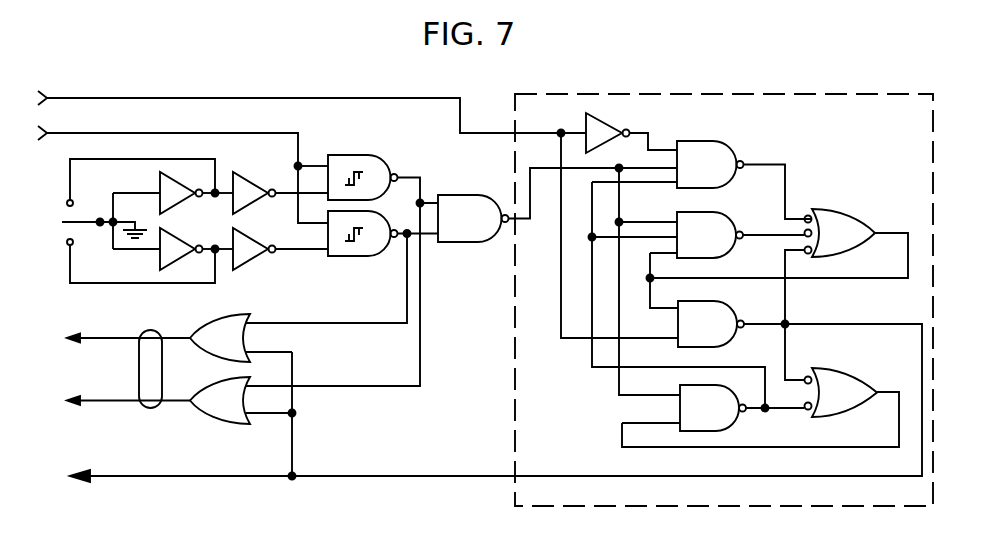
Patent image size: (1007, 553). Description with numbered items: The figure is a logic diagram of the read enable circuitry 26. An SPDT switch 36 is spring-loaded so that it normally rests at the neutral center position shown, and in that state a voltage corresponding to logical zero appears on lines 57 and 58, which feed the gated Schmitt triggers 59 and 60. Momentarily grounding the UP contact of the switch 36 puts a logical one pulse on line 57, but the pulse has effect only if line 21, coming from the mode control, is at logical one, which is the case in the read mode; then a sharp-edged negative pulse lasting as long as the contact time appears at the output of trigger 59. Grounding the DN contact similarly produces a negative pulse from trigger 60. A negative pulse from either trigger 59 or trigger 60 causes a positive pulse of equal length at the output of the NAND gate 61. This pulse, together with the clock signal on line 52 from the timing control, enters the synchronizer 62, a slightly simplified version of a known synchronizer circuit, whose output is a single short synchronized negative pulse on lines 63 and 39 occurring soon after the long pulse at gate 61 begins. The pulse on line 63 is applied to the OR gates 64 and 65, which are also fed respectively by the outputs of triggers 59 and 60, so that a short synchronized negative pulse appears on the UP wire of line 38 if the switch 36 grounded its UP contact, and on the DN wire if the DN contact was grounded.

The read enable circuitry 26 is at (475, 389).
The line from mode control 21 is at (266, 132).
The clock signal line 52 is at (356, 96).
The SPDT switch 36 is at (62, 222).
The line with UP and DN wires 38 is at (148, 330).
The synchronizer output line 39 is at (150, 476).
The line to trigger 59 57 is at (287, 190).
The line to trigger 60 58 is at (305, 251).
The gated Schmitt trigger 59 is at (379, 155).
The gated Schmitt trigger 60 is at (363, 258).
The NAND gate 61 is at (462, 195).
The synchronizer 62 is at (514, 285).
The synchronizer output line 63 is at (598, 474).
The OR gate 64 is at (196, 407).
The OR gate 65 is at (212, 315).